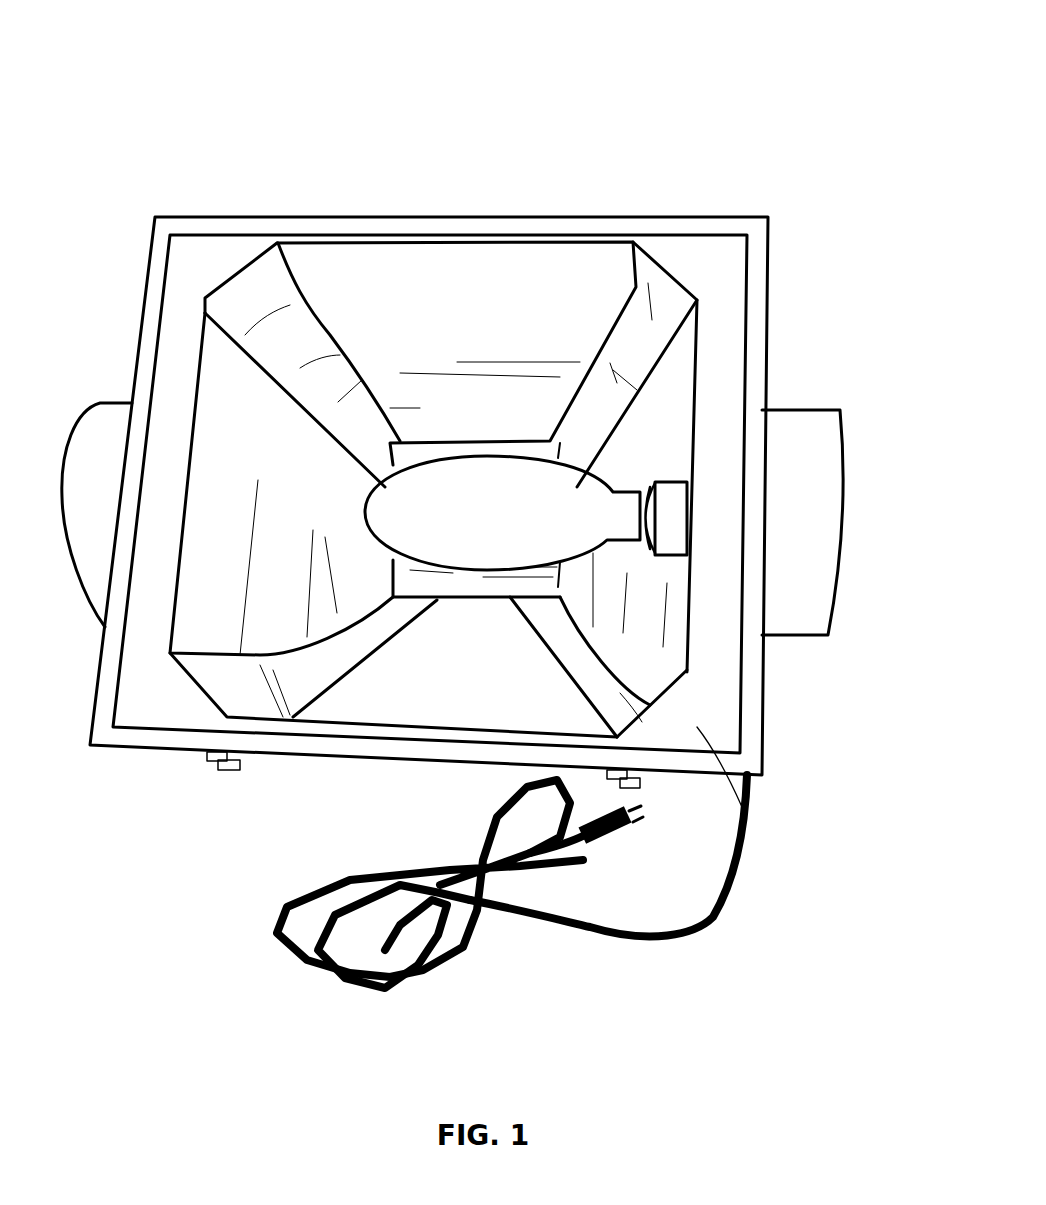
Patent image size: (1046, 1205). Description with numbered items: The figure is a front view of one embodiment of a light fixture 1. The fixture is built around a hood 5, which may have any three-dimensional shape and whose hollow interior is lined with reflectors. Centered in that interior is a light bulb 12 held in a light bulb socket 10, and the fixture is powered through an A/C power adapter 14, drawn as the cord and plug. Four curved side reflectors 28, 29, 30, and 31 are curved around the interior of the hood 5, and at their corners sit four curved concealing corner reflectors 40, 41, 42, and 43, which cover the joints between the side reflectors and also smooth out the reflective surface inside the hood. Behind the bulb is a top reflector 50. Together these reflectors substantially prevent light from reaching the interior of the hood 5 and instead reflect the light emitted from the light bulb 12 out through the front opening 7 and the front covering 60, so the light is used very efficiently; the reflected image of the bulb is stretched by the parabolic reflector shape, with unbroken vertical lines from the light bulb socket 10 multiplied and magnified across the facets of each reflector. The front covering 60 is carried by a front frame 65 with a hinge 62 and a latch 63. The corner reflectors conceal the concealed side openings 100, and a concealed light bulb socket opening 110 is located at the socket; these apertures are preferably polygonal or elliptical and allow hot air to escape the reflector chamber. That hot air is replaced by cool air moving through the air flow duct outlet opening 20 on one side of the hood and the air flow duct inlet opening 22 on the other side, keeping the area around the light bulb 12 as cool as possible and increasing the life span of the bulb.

The light fixture 1 is at (727, 172).
The hood 5 is at (763, 695).
The front opening 7 is at (480, 498).
The light bulb socket 10 is at (673, 502).
The light bulb 12 is at (580, 487).
The A/C power adapter 14 is at (483, 913).
The air flow duct outlet opening 20 is at (812, 612).
The air flow duct inlet opening 22 is at (93, 537).
The curved side reflector 28 is at (420, 685).
The curved side reflector 29 is at (485, 272).
The curved side reflector 30 is at (267, 450).
The curved side reflector 31 is at (640, 637).
The curved concealing corner reflector 40 is at (620, 693).
The curved concealing corner reflector 41 is at (250, 683).
The curved concealing corner reflector 42 is at (288, 290).
The curved concealing corner reflector 43 is at (652, 283).
The top reflector 50 is at (460, 590).
The front covering 60 is at (760, 238).
The hinge 62 is at (280, 217).
The latch 63 is at (640, 787).
The front frame 65 is at (750, 833).
The concealed side openings 100 is at (310, 408).
The concealed light bulb socket opening 110 is at (645, 548).